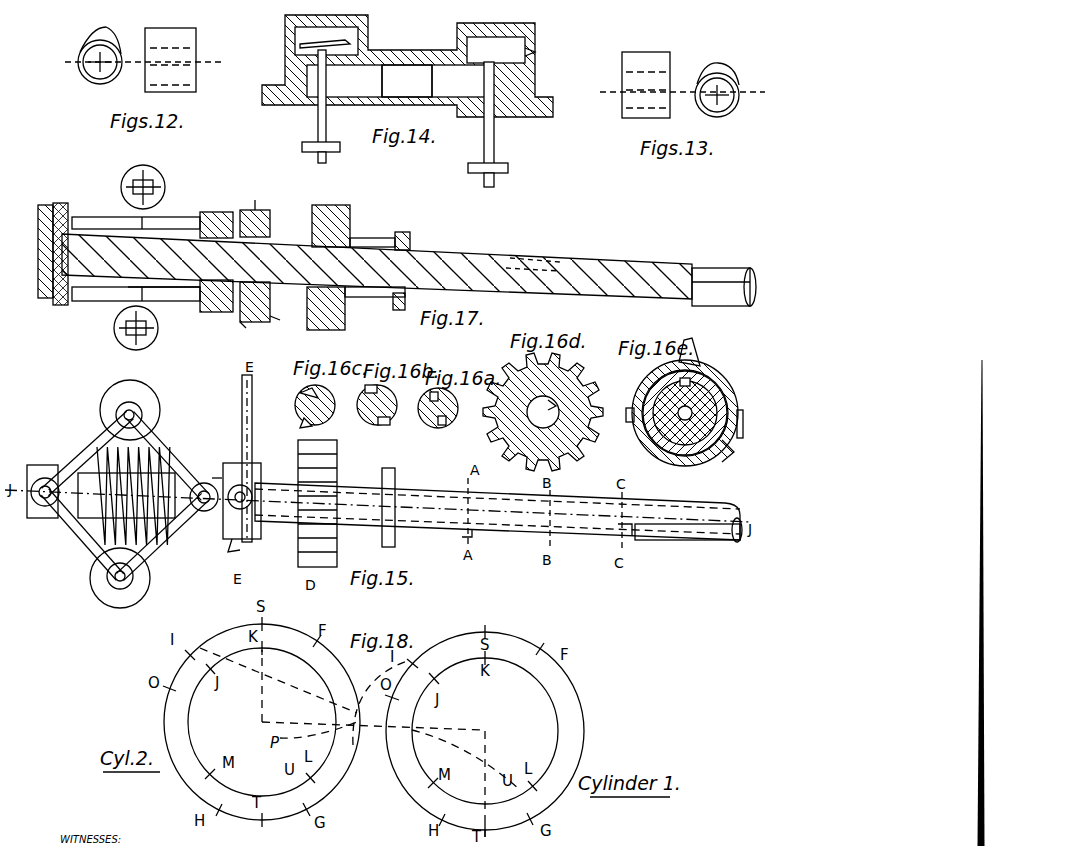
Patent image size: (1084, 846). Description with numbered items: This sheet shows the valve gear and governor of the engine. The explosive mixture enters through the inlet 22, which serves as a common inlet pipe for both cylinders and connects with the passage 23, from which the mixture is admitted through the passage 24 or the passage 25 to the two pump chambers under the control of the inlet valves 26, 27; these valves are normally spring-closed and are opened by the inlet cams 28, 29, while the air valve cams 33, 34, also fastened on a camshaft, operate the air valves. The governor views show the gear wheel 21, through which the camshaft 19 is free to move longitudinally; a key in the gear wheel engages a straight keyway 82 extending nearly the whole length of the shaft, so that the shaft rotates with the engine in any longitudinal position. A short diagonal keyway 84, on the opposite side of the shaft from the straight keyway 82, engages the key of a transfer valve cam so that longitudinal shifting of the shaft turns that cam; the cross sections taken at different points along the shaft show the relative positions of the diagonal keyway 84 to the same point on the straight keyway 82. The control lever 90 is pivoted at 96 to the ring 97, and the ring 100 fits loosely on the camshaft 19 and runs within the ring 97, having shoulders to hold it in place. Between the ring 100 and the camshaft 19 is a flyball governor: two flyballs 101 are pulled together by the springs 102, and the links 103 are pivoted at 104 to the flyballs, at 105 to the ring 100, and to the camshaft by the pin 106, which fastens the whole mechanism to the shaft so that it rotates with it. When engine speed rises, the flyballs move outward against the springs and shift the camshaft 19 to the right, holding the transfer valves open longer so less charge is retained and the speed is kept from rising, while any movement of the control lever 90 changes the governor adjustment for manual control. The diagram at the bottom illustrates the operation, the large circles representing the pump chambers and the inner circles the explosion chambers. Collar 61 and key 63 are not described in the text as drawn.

In FIG. 17, the camshaft 19 is at (612, 262).
In FIG. 16C, the camshaft 19 is at (330, 400).
In FIG. 16B, the camshaft 19 is at (383, 406).
In FIG. 16A, the camshaft 19 is at (443, 411).
In FIG. 16D, the camshaft 19 is at (575, 400).
In FIG. 16E, the camshaft 19 is at (655, 448).
In FIG. 15, the camshaft 19 is at (275, 482).
In FIG. 17, the gear wheel 21 is at (345, 218).
In FIG. 16D, the gear wheel 21 is at (578, 440).
In FIG. 15, the gear wheel 21 is at (337, 468).
In FIG. 14, the explosive mixture inlet 22 is at (407, 81).
In FIG. 14, the passage 23 is at (396, 81).
In FIG. 14, the passage 24 is at (358, 38).
In FIG. 14, the passage 25 is at (496, 50).
In FIG. 14, the inlet valve 26 is at (290, 37).
In FIG. 14, the inlet valve 27 is at (532, 54).
In FIG. 12, the inlet cam 28 is at (156, 36).
In FIG. 12, the inlet cam 29 is at (104, 35).
In FIG. 13, the air valve cam 33 is at (652, 62).
In FIG. 13, the air valve cam 34 is at (710, 70).
In FIG. 17, the collar 61 is at (400, 232).
In FIG. 15, the collar 61 is at (402, 452).
In FIG. 16D, the key 63 is at (560, 398).
In FIG. 17, the straight keyway 82 is at (718, 292).
In FIG. 16C, the straight keyway 82 is at (302, 392).
In FIG. 16B, the straight keyway 82 is at (378, 390).
In FIG. 15, the straight keyway 82 is at (738, 542).
In FIG. 17, the diagonal keyway 84 is at (530, 262).
In FIG. 16C, the diagonal keyway 84 is at (312, 426).
In FIG. 16B, the diagonal keyway 84 is at (376, 432).
In FIG. 16A, the diagonal keyway 84 is at (448, 428).
In FIG. 15, the diagonal keyway 84 is at (640, 538).
In FIG. 17, the control lever 90 is at (254, 212).
In FIG. 16E, the control lever 90 is at (696, 348).
In FIG. 15, the control lever 90 is at (242, 418).
In FIG. 17, the pivot 96 is at (245, 333).
In FIG. 16E, the pivot 96 is at (735, 420).
In FIG. 15, the pivot 96 is at (258, 522).
In FIG. 17, the ring 97 is at (275, 325).
In FIG. 16E, the ring 97 is at (722, 450).
In FIG. 15, the ring 97 is at (243, 552).
In FIG. 17, the ring 100 is at (300, 224).
In FIG. 16E, the ring 100 is at (664, 450).
In FIG. 15, the ring 100 is at (222, 476).
In FIG. 17, the flyballs 101 is at (164, 292).
In FIG. 15, the flyballs 101 is at (118, 392).
In FIG. 17, the springs 102 is at (163, 182).
In FIG. 15, the springs 102 is at (168, 465).
In FIG. 17, the links 103 is at (112, 217).
In FIG. 15, the links 103 is at (98, 444).
In FIG. 17, the pivot 104 is at (122, 186).
In FIG. 15, the pivot 104 is at (122, 412).
In FIG. 17, the pivot 105 is at (218, 312).
In FIG. 15, the pivot 105 is at (190, 525).
In FIG. 17, the pin 106 is at (58, 204).
In FIG. 15, the pin 106 is at (66, 464).